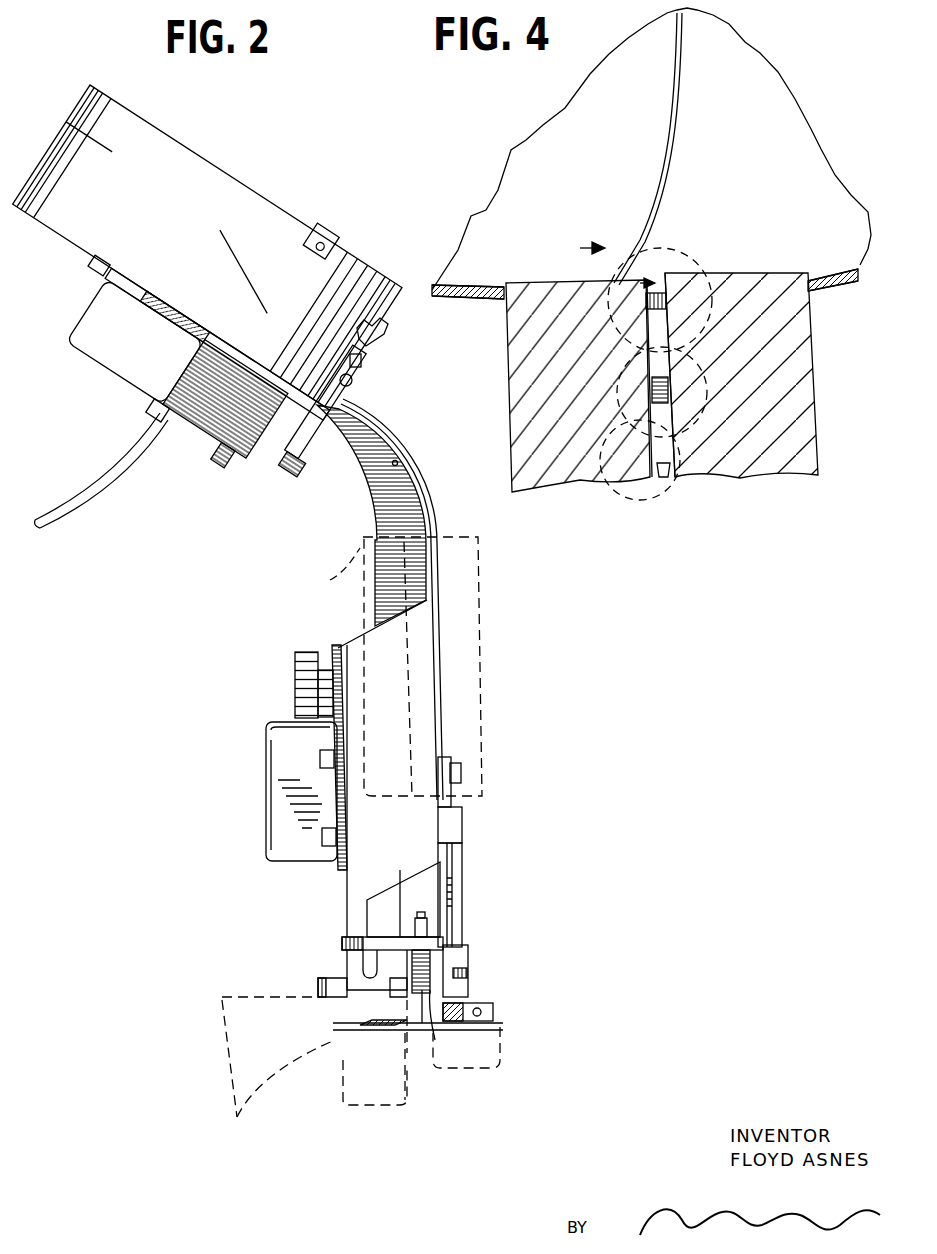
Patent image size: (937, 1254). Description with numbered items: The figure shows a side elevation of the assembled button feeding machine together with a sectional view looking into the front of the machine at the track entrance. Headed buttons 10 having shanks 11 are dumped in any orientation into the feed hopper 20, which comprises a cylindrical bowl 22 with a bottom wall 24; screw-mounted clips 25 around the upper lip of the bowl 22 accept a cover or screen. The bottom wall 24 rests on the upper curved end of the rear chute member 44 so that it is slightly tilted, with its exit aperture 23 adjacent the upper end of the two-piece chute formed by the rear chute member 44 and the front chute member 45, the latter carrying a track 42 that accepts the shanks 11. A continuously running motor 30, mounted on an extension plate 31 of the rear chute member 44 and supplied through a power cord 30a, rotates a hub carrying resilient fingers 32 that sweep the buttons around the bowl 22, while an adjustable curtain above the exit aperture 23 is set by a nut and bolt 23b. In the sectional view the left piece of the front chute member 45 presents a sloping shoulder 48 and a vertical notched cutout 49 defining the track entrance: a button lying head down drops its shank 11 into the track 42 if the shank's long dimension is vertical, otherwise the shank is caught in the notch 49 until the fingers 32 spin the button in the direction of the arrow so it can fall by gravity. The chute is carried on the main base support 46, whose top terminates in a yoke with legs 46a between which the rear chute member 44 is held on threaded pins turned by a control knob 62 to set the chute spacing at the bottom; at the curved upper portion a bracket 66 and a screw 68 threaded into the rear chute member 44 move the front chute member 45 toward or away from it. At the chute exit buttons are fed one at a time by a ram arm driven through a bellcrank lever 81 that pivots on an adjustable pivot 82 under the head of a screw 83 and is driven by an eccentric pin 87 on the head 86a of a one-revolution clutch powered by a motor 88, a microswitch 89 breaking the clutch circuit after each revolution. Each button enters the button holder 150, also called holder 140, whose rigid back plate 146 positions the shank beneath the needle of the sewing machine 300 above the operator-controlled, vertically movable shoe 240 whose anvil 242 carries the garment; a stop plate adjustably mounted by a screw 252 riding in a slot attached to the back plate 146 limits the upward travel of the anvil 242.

In FIG. 2, the feed hopper 20 is at (207, 246).
In FIG. 2, the cylindrical bowl 22 is at (223, 210).
In FIG. 4, the cylindrical bowl 22 is at (836, 296).
In FIG. 2, the screw-mounted clips 25 is at (313, 233).
In FIG. 2, the motor 30 is at (107, 315).
In FIG. 2, the extension plate 31 is at (180, 318).
In FIG. 2, the nut and bolt 23b is at (382, 330).
In FIG. 2, the exit aperture 23 is at (360, 364).
In FIG. 2, the bracket 66 is at (338, 398).
In FIG. 2, the front chute member 45 is at (400, 442).
In FIG. 4, the front chute member 45 is at (555, 495).
In FIG. 2, the track 42 is at (398, 462).
In FIG. 4, the track 42 is at (640, 478).
In FIG. 2, the power cord 30a is at (118, 472).
In FIG. 2, the screw 68 is at (290, 472).
In FIG. 2, the rear chute member 44 is at (375, 483).
In FIG. 2, the sewing machine 300 is at (480, 592).
In FIG. 2, the yoke legs 46a is at (392, 657).
In FIG. 2, the control knob 62 is at (296, 657).
In FIG. 2, the motor 88 is at (280, 758).
In FIG. 2, the adjustable pivot 82 is at (443, 757).
In FIG. 2, the screw 83 is at (462, 772).
In FIG. 2, the microswitch 89 is at (464, 817).
In FIG. 2, the eccentrically mounted pin 87 is at (455, 870).
In FIG. 2, the clutch head 86a is at (452, 890).
In FIG. 2, the bellcrank lever 81 is at (462, 927).
In FIG. 2, the holder 140 is at (473, 959).
In FIG. 2, the main base support 46 is at (335, 983).
In FIG. 2, the button holder 150 is at (460, 984).
In FIG. 2, the gear 252 is at (410, 960).
In FIG. 2, the anvil 242 is at (490, 1012).
In FIG. 2, the rear plate member 146 is at (430, 990).
In FIG. 2, the shoe 240 is at (365, 1030).
In FIG. 4, the bottom wall 24 is at (585, 177).
In FIG. 4, the elongated fingers 32 is at (673, 165).
In FIG. 4, the headed buttons 10 is at (665, 273).
In FIG. 4, the sloping shoulder 48 is at (612, 287).
In FIG. 4, the notched cutout 49 is at (640, 300).
In FIG. 4, the shanks 11 is at (668, 375).